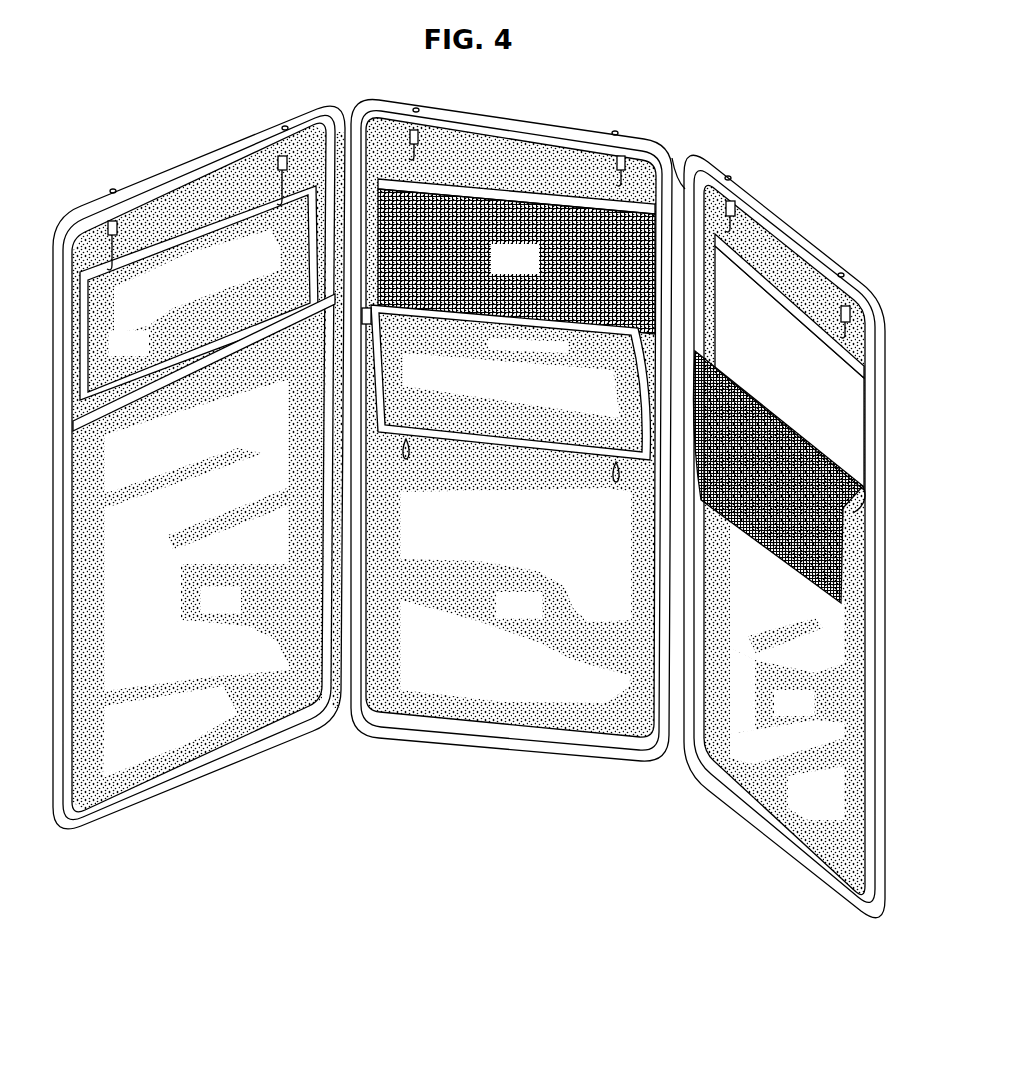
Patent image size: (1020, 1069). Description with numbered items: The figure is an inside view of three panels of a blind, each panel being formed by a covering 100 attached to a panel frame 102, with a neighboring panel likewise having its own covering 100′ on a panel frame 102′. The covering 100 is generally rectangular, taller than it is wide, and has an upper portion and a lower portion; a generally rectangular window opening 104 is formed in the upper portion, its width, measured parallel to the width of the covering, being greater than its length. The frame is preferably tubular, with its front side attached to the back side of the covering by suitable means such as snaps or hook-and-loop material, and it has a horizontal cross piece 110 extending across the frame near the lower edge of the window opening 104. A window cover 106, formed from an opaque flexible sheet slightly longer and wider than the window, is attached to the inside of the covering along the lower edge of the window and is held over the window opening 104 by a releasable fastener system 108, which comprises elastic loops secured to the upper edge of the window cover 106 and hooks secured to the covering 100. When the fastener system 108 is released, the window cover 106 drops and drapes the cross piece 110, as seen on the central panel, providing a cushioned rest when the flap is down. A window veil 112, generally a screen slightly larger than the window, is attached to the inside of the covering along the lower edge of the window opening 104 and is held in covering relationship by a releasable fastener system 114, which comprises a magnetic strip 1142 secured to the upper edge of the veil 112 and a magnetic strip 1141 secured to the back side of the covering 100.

The covering 100 is at (194, 603).
The covering 100′ is at (490, 607).
The panel frame 102 is at (189, 792).
The panel frame 102′ is at (472, 754).
The window opening 104 is at (763, 364).
The window cover 106 is at (102, 346).
The releasable fastener system 108 is at (258, 166).
The horizontal cross piece 110 is at (220, 357).
The window veil 112 is at (487, 258).
The releasable fastener system 114 is at (556, 178).
The magnetic strip 1141 is at (780, 287).
The magnetic strip 1142 is at (773, 566).